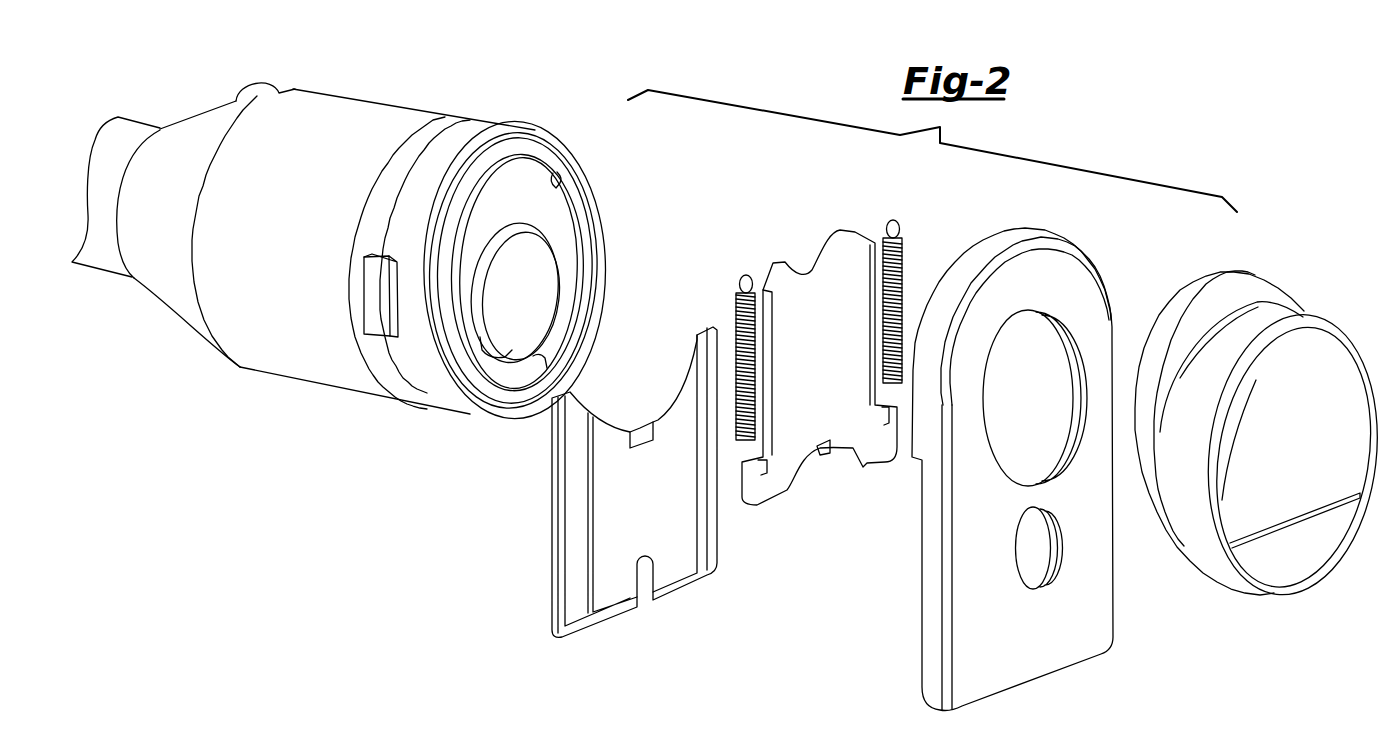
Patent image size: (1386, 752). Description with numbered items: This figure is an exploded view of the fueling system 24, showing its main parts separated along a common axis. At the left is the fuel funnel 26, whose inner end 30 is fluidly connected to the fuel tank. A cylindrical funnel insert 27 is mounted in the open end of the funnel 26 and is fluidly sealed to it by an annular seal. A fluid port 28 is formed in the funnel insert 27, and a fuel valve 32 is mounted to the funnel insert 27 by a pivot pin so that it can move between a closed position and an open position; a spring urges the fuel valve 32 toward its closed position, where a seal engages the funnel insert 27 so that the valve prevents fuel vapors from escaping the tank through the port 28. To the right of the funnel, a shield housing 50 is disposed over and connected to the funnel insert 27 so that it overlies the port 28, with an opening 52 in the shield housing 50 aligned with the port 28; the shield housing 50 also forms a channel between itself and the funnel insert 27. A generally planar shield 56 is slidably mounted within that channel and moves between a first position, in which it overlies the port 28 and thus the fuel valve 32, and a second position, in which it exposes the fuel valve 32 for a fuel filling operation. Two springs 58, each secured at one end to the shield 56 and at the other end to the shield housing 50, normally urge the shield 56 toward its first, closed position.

The fueling system 24 is at (574, 54).
The fuel funnel 26 is at (346, 99).
The funnel insert 27 is at (545, 183).
The fluid port 28 is at (480, 337).
The inner end 30 is at (133, 128).
The fuel valve 32 is at (550, 277).
The shield housing 50 is at (933, 678).
The opening 52 is at (1071, 354).
The shield 56 is at (788, 487).
The springs 58 is at (903, 251).